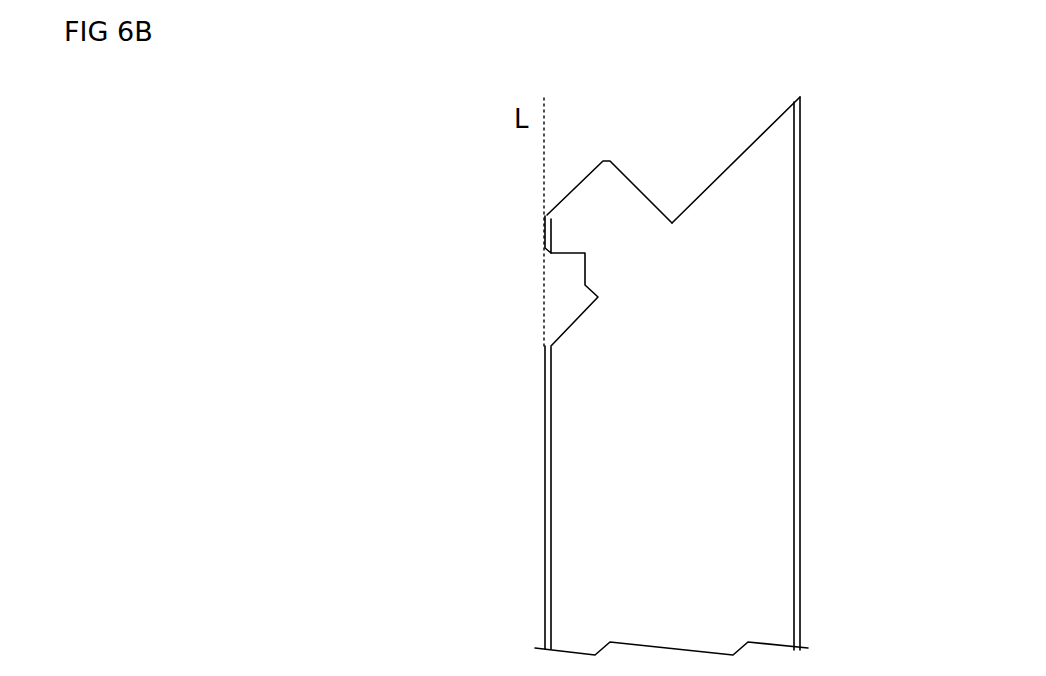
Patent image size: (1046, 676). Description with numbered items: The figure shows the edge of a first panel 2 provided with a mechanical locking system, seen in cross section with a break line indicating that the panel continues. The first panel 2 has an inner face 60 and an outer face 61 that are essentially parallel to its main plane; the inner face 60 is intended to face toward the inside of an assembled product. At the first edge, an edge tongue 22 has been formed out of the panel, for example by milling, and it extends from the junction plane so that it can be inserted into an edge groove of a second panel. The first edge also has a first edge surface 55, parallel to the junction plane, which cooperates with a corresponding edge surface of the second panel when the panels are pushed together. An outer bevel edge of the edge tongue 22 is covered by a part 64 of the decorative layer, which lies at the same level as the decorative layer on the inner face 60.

The first panel 2 is at (652, 376).
The edge tongue 22 is at (618, 191).
The first edge surface 55 is at (714, 181).
The inner face 60 is at (545, 467).
The outer face 61 is at (800, 443).
The part of the decorative layer 64 is at (545, 240).